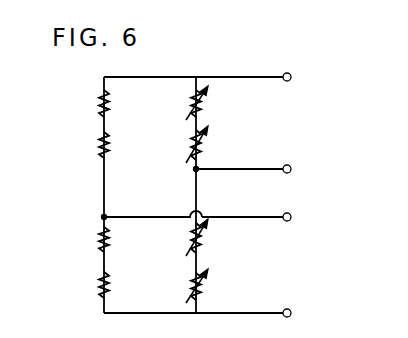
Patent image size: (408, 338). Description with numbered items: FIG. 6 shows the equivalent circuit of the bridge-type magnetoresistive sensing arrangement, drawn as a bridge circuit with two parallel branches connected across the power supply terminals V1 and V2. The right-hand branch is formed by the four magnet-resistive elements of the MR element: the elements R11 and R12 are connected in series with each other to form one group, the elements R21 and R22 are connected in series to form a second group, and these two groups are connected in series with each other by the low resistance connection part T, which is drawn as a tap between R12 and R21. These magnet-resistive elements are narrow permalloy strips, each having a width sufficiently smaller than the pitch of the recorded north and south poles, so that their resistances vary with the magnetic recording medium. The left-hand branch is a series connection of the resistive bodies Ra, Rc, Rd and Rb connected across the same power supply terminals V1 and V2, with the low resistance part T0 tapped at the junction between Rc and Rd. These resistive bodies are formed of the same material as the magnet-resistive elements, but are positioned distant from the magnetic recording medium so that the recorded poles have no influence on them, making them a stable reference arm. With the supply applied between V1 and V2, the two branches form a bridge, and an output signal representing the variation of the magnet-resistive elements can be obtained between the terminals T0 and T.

The resistive body Ra is at (86, 104).
The resistive body Rb is at (85, 285).
The resistive body Rc is at (86, 146).
The resistive body Rd is at (86, 239).
The magnet-resistive element R11 is at (183, 103).
The magnet-resistive element R12 is at (183, 144).
The magnet-resistive element R21 is at (179, 237).
The magnet-resistive element R22 is at (177, 286).
The power supply terminal V1 is at (258, 79).
The power supply terminal V2 is at (258, 315).
The connection part T is at (254, 171).
The low resistance part T0 is at (261, 219).